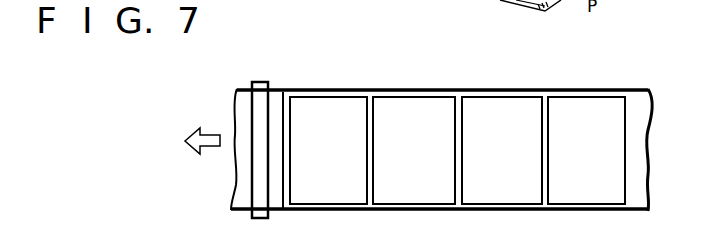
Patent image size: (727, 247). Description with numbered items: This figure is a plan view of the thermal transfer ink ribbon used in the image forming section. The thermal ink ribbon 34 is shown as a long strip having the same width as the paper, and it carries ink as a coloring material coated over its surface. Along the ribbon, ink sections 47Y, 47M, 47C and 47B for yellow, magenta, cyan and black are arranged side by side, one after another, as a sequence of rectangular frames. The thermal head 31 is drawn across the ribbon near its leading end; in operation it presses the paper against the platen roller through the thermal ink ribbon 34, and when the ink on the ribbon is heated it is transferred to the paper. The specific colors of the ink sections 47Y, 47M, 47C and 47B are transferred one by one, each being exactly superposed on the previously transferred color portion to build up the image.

The thermal head 31 is at (260, 88).
The thermal ink ribbon 34 is at (413, 90).
The ink section for yellow 47Y is at (325, 196).
The ink section for magenta 47M is at (415, 196).
The ink section for cyan 47C is at (505, 196).
The ink section for black 47B is at (595, 196).